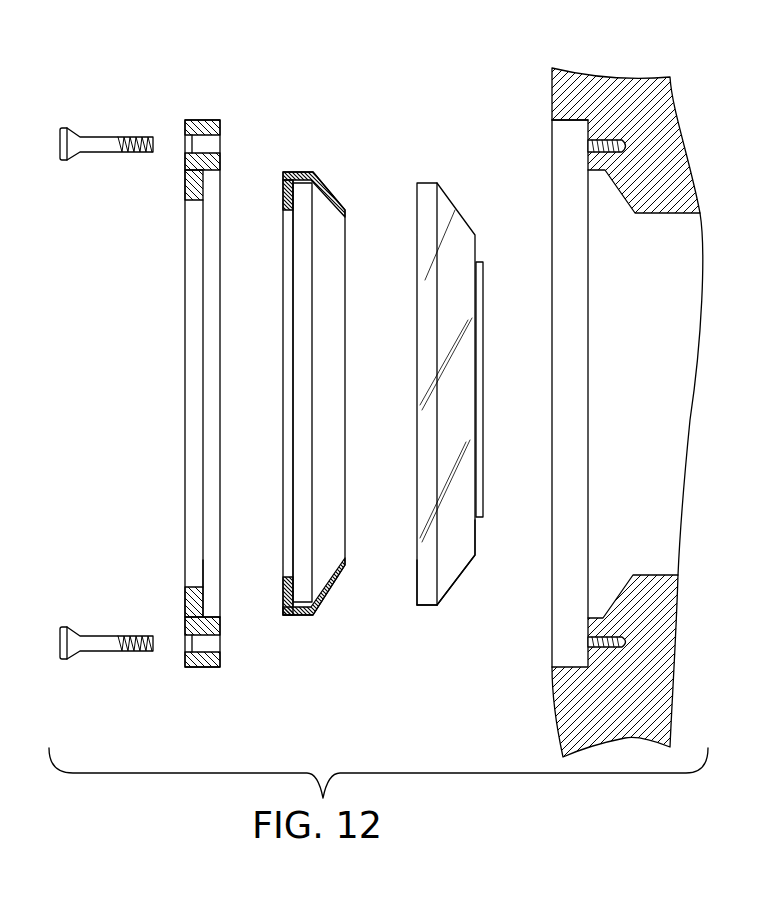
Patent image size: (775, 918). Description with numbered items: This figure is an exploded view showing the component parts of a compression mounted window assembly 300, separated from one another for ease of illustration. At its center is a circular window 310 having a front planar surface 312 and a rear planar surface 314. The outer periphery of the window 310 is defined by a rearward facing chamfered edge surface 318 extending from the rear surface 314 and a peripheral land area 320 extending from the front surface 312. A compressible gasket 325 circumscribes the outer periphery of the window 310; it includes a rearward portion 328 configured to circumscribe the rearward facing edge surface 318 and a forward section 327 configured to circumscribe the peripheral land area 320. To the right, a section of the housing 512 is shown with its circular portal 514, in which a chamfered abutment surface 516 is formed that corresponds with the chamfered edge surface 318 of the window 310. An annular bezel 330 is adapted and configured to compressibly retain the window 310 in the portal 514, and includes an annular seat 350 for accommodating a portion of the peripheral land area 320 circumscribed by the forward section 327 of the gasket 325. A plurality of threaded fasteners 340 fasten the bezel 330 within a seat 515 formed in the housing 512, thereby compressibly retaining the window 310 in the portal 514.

The compressible window assembly 300 is at (412, 108).
The circular window 310 is at (477, 262).
The front planar surface 312 is at (415, 583).
The rear planar surface 314 is at (477, 533).
The rearward facing chamfered edge surface 318 is at (450, 195).
The peripheral land area 320 is at (423, 607).
The compressible gasket 325 is at (285, 172).
The forward section 327 is at (300, 617).
The rearward portion 328 is at (334, 190).
The annular bezel 330 is at (207, 118).
The threaded fasteners 340 is at (93, 140).
The annular seat 350 is at (205, 602).
The housing 512 is at (662, 112).
The portal 514 is at (657, 213).
The seat 515 is at (565, 125).
The chamfered abutment surface 516 is at (630, 580).